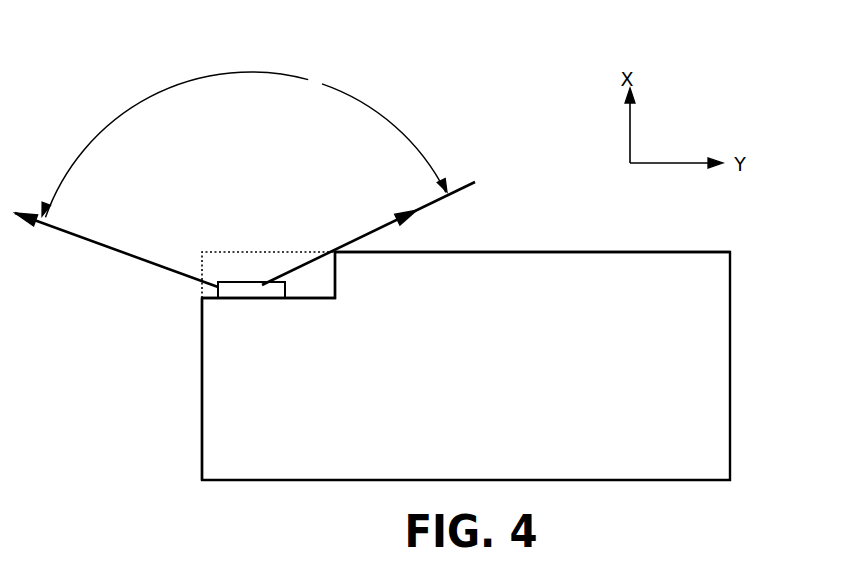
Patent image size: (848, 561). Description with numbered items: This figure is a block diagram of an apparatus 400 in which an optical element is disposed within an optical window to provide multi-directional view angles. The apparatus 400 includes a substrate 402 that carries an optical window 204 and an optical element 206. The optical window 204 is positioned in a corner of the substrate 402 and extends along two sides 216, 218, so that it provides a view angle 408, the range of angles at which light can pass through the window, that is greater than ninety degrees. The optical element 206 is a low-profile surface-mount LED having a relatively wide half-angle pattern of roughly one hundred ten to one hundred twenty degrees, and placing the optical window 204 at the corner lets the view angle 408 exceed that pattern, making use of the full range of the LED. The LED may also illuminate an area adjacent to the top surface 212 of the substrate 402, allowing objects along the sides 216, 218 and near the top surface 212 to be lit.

The apparatus 400 is at (120, 54).
The optical window 204 is at (318, 202).
The optical element 206 is at (235, 290).
The substrate 402 is at (202, 378).
The view angle 408 is at (130, 254).
The top surface 212 is at (658, 308).
The side 216 is at (543, 242).
The side 218 is at (196, 420).